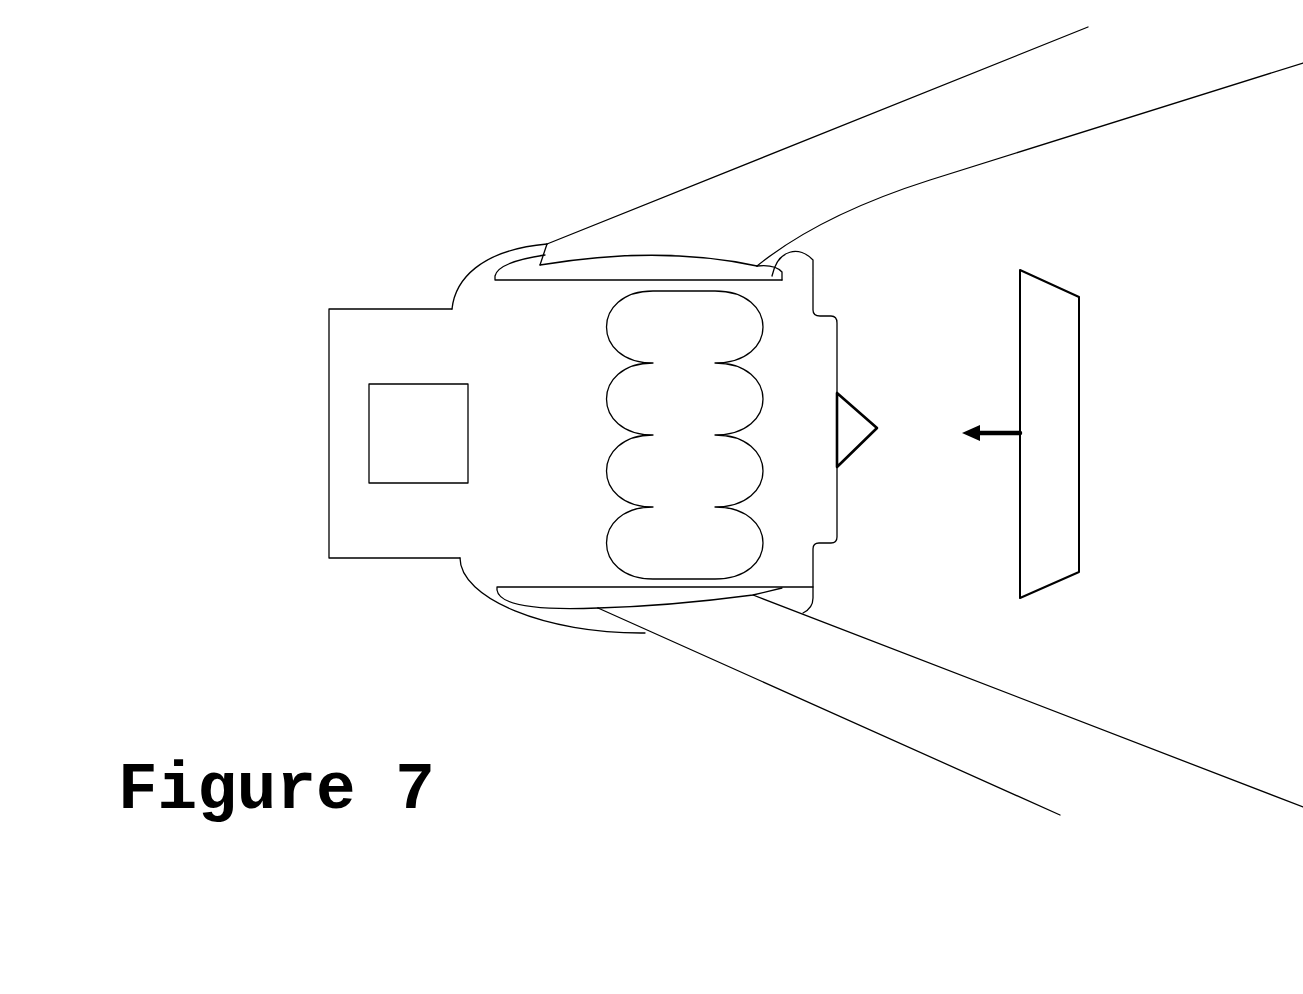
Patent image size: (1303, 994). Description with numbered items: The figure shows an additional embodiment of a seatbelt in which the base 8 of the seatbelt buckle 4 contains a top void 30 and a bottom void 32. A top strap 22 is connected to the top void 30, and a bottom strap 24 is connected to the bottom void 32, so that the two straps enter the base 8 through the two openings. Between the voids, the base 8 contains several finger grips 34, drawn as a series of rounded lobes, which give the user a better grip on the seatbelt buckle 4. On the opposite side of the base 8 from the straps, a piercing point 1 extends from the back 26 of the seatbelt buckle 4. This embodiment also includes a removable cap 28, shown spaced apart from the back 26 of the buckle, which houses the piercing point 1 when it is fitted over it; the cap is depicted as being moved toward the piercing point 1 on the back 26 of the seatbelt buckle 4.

The piercing point 1 is at (879, 429).
The seatbelt buckle 4 is at (315, 298).
The base 8 is at (443, 243).
The top strap 22 is at (1127, 145).
The bottom strap 24 is at (1128, 712).
The back 26 is at (808, 338).
The removable cap 28 is at (1090, 347).
The top void 30 is at (757, 268).
The bottom void 32 is at (721, 592).
The finger grips 34 is at (675, 409).